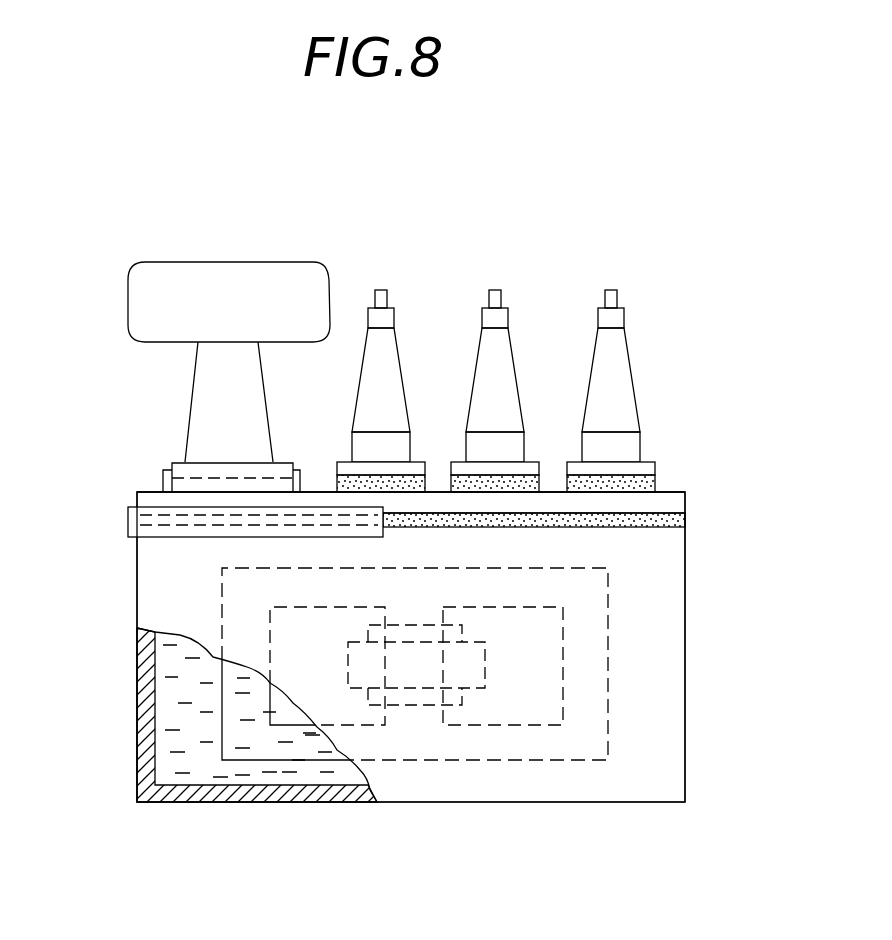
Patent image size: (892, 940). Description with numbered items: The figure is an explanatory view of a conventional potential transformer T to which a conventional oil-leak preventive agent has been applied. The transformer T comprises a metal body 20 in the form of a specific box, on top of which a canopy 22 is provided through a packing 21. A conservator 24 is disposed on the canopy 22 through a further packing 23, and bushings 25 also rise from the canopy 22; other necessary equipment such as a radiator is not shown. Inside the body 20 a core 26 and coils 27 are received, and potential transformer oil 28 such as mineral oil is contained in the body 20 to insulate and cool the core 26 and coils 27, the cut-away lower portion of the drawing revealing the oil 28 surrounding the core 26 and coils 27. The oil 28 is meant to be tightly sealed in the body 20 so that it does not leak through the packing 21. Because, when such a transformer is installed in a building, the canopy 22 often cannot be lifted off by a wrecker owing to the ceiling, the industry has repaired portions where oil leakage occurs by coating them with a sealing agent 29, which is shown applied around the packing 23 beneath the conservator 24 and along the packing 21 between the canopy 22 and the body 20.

The potential transformer T is at (597, 225).
The metal body 20 is at (663, 638).
The packing 21 is at (677, 525).
The canopy 22 is at (663, 502).
The packing 23 is at (643, 480).
The conservator 24 is at (155, 308).
The bushings 25 is at (622, 380).
The core 26 is at (303, 740).
The coils 27 is at (387, 673).
The potential transformer oil 28 is at (192, 763).
The sealing agent 29 is at (160, 480).